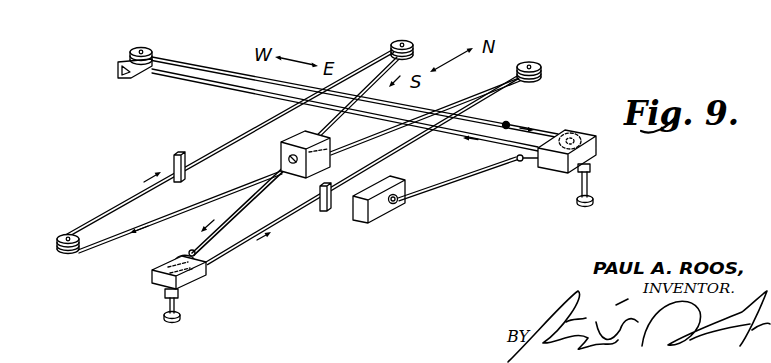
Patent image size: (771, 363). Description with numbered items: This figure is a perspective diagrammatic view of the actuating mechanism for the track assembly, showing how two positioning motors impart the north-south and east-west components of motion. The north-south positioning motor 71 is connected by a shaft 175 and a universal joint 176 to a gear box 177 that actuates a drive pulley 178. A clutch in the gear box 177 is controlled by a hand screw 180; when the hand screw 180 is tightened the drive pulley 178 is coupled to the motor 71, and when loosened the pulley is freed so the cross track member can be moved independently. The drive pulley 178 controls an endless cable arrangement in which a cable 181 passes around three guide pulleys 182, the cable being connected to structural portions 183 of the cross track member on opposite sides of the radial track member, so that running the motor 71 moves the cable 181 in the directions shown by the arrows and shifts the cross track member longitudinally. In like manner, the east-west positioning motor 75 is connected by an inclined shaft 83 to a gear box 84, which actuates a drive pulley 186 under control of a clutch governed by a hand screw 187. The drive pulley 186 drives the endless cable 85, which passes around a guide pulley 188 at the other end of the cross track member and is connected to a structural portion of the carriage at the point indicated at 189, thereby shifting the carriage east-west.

The north-south positioning motor 71 is at (280, 148).
The east-west positioning motor 75 is at (388, 219).
The inclined shaft 83 is at (463, 178).
The gear box 84 is at (553, 169).
The cable 85 is at (212, 82).
The shaft 175 is at (248, 198).
The universal joint 176 is at (289, 165).
The gear box 177 is at (152, 281).
The drive pulley 178 is at (191, 279).
The hand screw 180 is at (167, 322).
The cable 181 is at (232, 140).
The guide pulleys 182 is at (410, 44).
The structural portions 183 is at (174, 158).
The drive pulley 186 is at (583, 126).
The hand screw 187 is at (580, 206).
The guide pulley 188 is at (152, 41).
The connection to carriage 189 is at (509, 123).